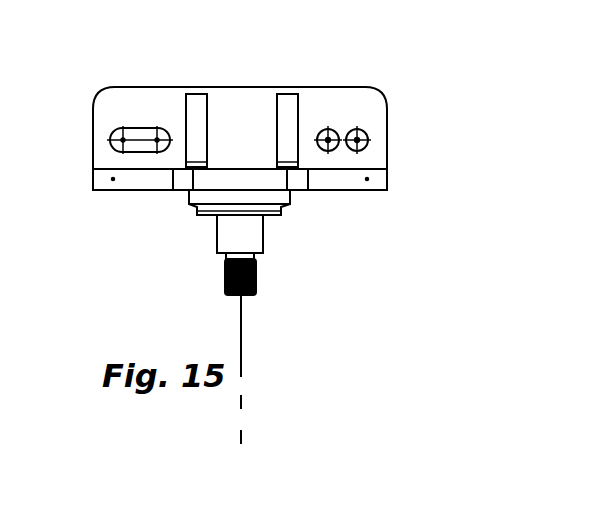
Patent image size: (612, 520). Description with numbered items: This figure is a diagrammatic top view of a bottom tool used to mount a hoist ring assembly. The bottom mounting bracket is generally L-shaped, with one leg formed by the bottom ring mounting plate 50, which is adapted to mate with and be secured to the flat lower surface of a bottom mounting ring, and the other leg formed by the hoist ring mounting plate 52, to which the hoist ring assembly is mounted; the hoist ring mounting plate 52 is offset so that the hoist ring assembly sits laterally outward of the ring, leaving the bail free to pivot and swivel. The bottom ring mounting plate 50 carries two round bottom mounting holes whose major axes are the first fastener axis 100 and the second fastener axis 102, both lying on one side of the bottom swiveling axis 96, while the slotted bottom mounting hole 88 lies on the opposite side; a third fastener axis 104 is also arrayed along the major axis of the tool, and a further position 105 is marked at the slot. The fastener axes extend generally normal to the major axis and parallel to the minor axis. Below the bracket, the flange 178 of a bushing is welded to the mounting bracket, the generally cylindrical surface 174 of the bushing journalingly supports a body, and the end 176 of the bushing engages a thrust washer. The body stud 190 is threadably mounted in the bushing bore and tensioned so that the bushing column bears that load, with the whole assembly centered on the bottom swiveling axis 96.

The bottom ring mounting plate 50 is at (333, 87).
The hoist ring mounting plate 52 is at (387, 184).
The slotted bottom mounting hole 88 is at (141, 127).
The third fastener axis 104 is at (159, 128).
The slot end position 105 is at (127, 152).
The second fastener axis 102 is at (328, 128).
The first fastener axis 100 is at (368, 139).
The flange 178 is at (291, 192).
The generally cylindrical surface 174 is at (217, 243).
The end of the bushing 176 is at (218, 257).
The body stud 190 is at (257, 281).
The bottom swiveling axis 96 is at (241, 339).